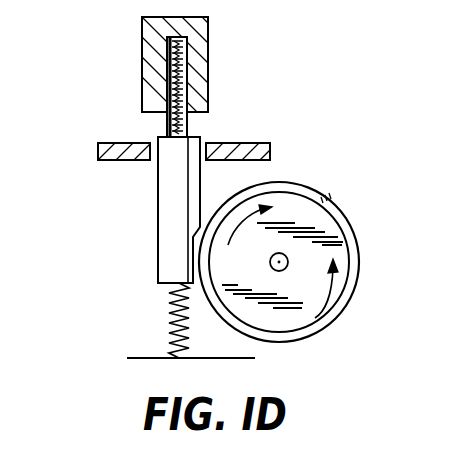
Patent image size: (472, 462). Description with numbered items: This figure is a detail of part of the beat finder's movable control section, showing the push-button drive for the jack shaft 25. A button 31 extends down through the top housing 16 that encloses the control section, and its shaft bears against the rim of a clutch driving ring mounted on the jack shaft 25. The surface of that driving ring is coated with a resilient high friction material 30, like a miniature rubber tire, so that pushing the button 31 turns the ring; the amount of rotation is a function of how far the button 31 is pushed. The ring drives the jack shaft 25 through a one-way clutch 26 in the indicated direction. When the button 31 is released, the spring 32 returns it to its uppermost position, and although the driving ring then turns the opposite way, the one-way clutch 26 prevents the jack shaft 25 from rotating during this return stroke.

The button 31 is at (196, 38).
The top housing 16 is at (238, 143).
The spring 32 is at (171, 321).
The resilient high friction material 30 is at (308, 333).
The jack shaft 25 is at (323, 222).
The one-way clutch 26 is at (353, 312).